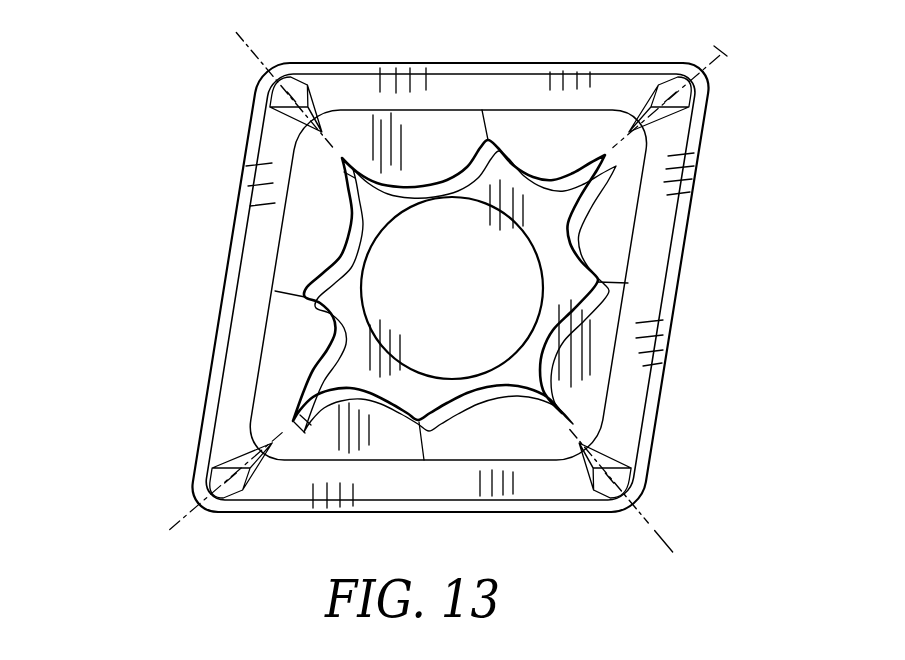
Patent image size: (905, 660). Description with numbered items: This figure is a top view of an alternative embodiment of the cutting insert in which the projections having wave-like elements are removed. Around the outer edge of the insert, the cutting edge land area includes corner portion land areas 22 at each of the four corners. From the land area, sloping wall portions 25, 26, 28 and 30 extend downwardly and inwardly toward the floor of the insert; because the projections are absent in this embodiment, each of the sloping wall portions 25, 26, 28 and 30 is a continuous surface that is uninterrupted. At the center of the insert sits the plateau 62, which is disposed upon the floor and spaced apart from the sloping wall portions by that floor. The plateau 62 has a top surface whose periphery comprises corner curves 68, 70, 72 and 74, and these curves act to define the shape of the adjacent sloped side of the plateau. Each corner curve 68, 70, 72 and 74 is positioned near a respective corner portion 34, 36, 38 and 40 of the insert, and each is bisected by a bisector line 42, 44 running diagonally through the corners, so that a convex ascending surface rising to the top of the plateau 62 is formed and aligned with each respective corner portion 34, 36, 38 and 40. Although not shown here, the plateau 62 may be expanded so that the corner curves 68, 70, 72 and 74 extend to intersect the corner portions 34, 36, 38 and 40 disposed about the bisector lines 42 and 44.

The corner portion land area 22 is at (574, 62).
The sloping wall portion 25 is at (650, 263).
The sloping wall portion 26 is at (370, 486).
The sloping wall portion 28 is at (258, 243).
The sloping wall portion 30 is at (460, 80).
The corner portion 34 is at (728, 76).
The corner portion 36 is at (631, 530).
The corner portion 38 is at (158, 495).
The corner portion 40 is at (232, 80).
The bisector line 42 is at (720, 50).
The bisector line 44 is at (662, 527).
The plateau 62 is at (398, 200).
The corner curve 68 is at (589, 158).
The corner curve 70 is at (543, 410).
The corner curve 72 is at (307, 393).
The corner curve 74 is at (341, 178).